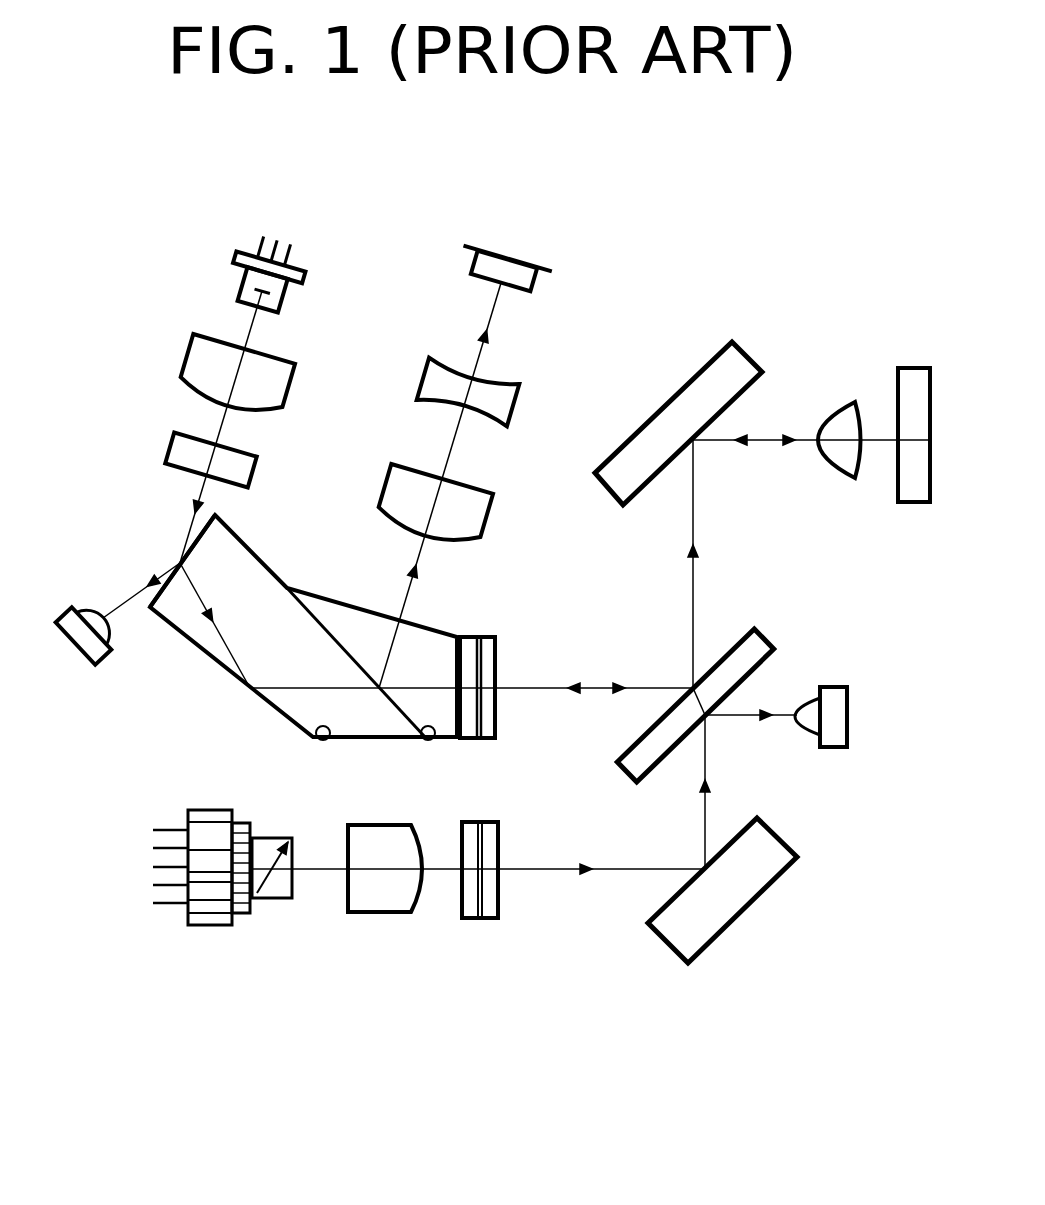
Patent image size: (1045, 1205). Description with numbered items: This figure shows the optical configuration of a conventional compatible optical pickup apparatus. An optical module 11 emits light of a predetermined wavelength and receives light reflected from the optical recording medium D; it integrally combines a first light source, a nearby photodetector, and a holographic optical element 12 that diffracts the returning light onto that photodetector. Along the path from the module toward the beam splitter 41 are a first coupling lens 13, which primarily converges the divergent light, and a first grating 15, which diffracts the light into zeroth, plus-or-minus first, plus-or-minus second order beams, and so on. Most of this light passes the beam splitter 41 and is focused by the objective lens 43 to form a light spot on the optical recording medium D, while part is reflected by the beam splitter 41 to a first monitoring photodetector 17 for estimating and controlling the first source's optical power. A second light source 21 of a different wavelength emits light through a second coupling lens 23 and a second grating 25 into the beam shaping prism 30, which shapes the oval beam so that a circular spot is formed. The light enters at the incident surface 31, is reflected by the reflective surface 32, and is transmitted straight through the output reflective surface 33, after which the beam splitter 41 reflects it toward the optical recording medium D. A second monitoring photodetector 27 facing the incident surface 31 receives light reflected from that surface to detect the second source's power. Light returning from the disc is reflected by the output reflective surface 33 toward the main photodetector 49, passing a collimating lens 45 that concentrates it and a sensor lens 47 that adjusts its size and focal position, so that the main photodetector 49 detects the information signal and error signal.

The optical module 11 is at (217, 932).
The holographic optical element 12 is at (278, 894).
The first coupling lens 13 is at (380, 913).
The first grating 15 is at (483, 919).
The first monitoring photodetector 17 is at (835, 686).
The second light source 21 is at (240, 283).
The second coupling lens 23 is at (186, 356).
The second grating 25 is at (170, 446).
The second monitoring photodetector 27 is at (76, 648).
The beam shaping prism 30 is at (230, 688).
The incident surface 31 is at (150, 598).
The reflective surface 32 is at (330, 741).
The output reflective surface 33 is at (432, 741).
The beam splitter 41 is at (736, 645).
The objective lens 43 is at (845, 480).
The collimating lens 45 is at (388, 483).
The sensor lens 47 is at (422, 377).
The main photodetector 49 is at (477, 258).
The optical recording medium D is at (912, 502).